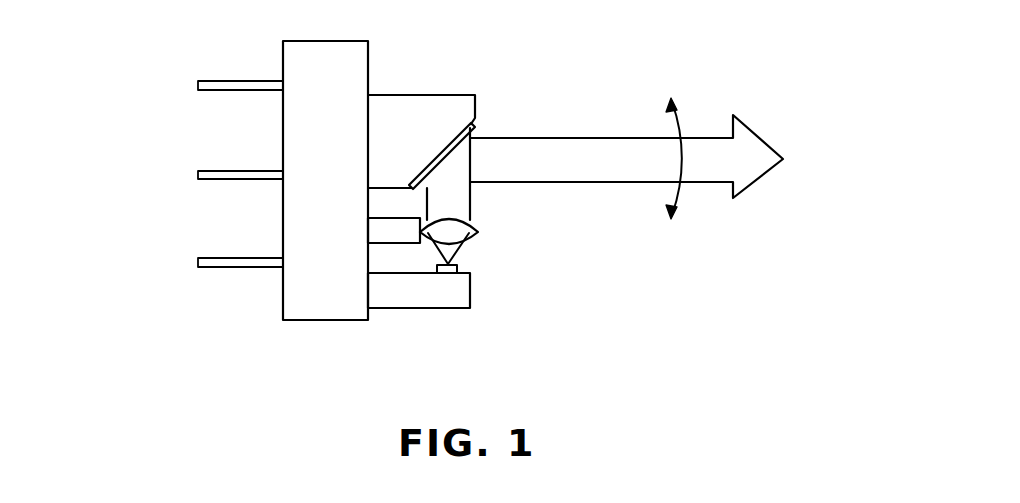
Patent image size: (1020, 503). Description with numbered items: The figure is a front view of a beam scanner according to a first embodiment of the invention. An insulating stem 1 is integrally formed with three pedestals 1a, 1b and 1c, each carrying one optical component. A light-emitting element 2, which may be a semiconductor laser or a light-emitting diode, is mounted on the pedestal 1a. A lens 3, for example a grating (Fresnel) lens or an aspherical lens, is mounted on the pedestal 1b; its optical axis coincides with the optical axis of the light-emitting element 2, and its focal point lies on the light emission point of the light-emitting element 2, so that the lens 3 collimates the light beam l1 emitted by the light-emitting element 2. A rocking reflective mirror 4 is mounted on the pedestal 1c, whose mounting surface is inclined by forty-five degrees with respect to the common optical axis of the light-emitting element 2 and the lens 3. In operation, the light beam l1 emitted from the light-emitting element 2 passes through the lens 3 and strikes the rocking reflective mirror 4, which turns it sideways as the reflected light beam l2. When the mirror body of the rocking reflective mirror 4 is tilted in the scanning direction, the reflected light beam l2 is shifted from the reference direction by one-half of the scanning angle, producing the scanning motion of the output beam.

The insulating stem 1 is at (318, 46).
The pedestal 1a is at (410, 295).
The pedestal 1b is at (390, 238).
The pedestal 1c is at (410, 104).
The light-emitting element 2 is at (459, 268).
The lens 3 is at (472, 228).
The rocking reflective mirror 4 is at (458, 156).
The light beam l1 is at (458, 247).
The reflected light beam l2 is at (596, 138).